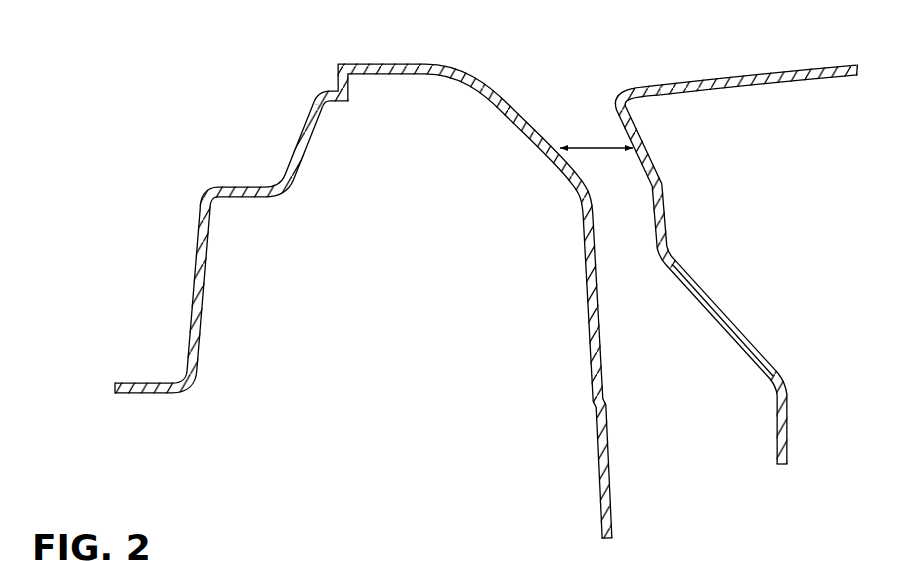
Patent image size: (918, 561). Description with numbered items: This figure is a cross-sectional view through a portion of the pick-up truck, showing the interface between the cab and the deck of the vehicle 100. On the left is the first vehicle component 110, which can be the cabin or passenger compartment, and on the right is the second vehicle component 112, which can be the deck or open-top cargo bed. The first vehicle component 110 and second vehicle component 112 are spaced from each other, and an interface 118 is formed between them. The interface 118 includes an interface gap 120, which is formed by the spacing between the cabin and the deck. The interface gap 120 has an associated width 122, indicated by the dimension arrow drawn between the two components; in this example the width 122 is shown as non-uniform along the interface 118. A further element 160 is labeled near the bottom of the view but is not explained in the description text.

The vehicle 100 is at (216, 107).
The first vehicle component 110 is at (337, 53).
The interface gap 120 is at (548, 104).
The second vehicle component 112 is at (700, 73).
The interface 118 is at (583, 104).
The width 122 is at (595, 149).
The lower component 160 is at (298, 560).